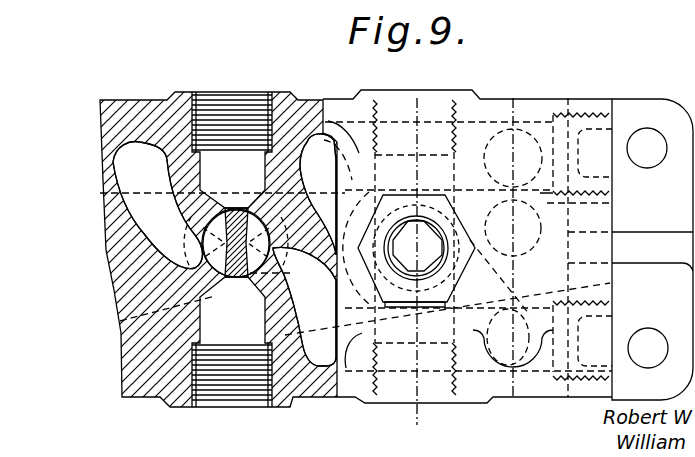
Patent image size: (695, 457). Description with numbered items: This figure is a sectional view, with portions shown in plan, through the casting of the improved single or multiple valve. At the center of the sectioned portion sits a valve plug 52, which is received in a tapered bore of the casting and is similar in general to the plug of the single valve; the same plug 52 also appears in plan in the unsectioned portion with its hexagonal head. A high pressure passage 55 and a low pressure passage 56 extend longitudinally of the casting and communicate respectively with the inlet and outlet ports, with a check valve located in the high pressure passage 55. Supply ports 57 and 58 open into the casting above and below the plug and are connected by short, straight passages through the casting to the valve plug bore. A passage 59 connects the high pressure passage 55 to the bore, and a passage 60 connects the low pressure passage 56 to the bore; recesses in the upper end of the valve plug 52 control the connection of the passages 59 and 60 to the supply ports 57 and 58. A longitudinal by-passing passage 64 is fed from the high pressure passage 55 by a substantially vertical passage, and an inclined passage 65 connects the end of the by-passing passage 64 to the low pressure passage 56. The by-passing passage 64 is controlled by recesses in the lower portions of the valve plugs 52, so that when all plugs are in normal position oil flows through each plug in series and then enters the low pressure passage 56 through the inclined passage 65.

The valve plug 52 is at (222, 262).
The high pressure passage 55 is at (417, 384).
The low pressure passage 56 is at (488, 124).
The supply port 57 is at (242, 404).
The supply port 58 is at (231, 77).
The passage 59 is at (612, 287).
The passage 60 is at (118, 170).
The by-passing passage 64 is at (519, 293).
The inclined passage 65 is at (610, 196).